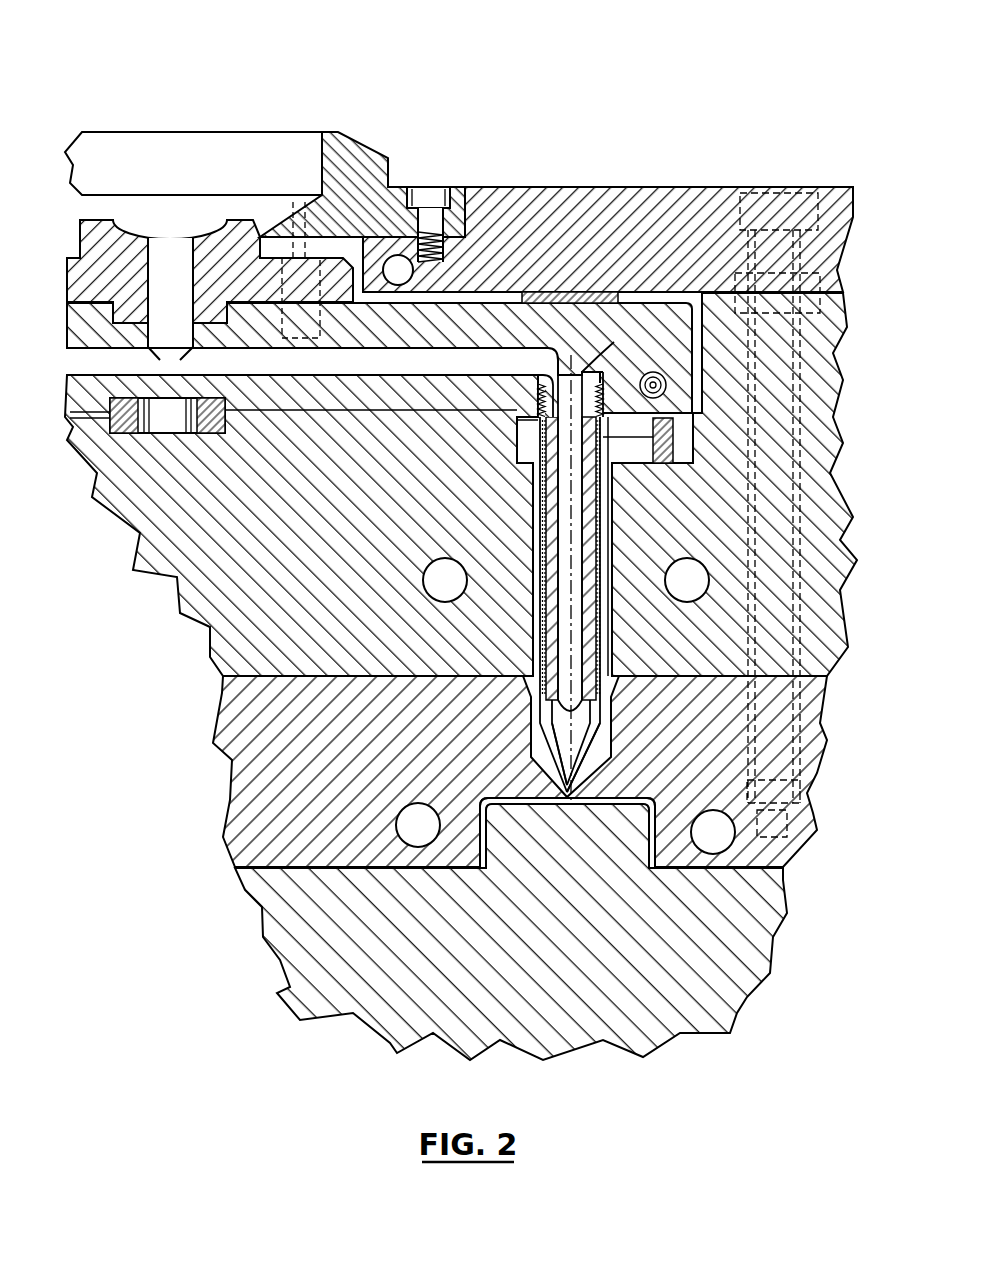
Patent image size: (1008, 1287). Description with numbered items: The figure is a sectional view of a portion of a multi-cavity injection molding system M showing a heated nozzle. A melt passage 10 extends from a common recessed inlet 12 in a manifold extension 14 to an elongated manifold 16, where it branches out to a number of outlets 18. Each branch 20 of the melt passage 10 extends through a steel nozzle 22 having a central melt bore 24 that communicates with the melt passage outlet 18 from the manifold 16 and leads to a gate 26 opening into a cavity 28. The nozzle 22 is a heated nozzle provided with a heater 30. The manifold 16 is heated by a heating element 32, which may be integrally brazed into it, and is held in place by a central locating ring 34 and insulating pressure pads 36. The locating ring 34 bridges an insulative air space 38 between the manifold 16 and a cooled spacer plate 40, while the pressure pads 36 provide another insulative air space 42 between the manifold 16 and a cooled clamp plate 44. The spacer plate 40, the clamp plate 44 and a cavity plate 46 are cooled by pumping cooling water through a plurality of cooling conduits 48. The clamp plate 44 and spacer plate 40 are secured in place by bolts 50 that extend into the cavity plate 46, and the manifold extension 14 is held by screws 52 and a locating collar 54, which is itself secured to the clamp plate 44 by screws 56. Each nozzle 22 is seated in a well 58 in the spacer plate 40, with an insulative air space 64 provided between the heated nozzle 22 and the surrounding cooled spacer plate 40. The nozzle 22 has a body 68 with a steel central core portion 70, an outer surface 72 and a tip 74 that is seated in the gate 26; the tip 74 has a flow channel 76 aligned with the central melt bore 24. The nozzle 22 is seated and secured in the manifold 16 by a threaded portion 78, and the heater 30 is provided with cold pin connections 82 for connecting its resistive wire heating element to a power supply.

The multi-cavity injection molding system M is at (466, 82).
The melt passage 10 is at (156, 291).
The common recessed inlet 12 is at (128, 230).
The manifold extension 14 is at (103, 240).
The elongated manifold 16 is at (95, 380).
The outlets 18 is at (567, 365).
The branch 20 is at (520, 380).
The nozzle 22 is at (615, 453).
The central melt bore 24 is at (532, 640).
The gate 26 is at (567, 805).
The cavity 28 is at (503, 805).
The heater 30 is at (618, 640).
The heating element 32 is at (690, 380).
The central locating ring 34 is at (125, 430).
The insulating pressure pads 36 is at (557, 306).
The insulative air space 38 is at (78, 414).
The spacer plate 40 is at (160, 572).
The insulative air space 42 is at (440, 296).
The clamp plate 44 is at (545, 200).
The cavity plate 46 is at (233, 768).
The cooling conduits 48 is at (400, 283).
The bolts 50 is at (818, 312).
The screws 52 is at (305, 205).
The locating collar 54 is at (347, 130).
The screws 56 is at (420, 188).
The well 58 is at (625, 507).
The insulative air space 64 is at (613, 532).
The body 68 is at (618, 655).
The central core portion 70 is at (620, 560).
The outer surface 72 is at (608, 585).
The tip 74 is at (592, 732).
The flow channel 76 is at (553, 735).
The threaded portion 78 is at (618, 302).
The cold pin connections 82 is at (650, 428).